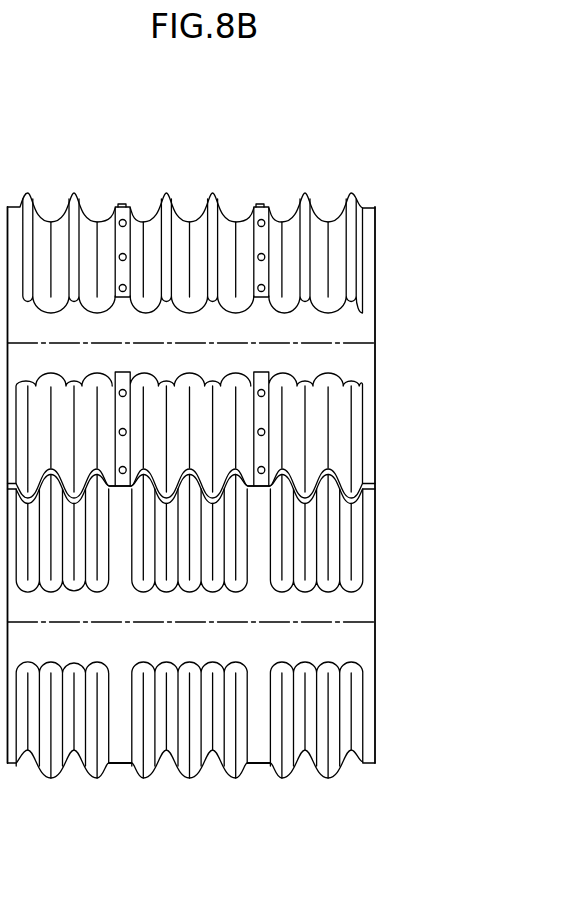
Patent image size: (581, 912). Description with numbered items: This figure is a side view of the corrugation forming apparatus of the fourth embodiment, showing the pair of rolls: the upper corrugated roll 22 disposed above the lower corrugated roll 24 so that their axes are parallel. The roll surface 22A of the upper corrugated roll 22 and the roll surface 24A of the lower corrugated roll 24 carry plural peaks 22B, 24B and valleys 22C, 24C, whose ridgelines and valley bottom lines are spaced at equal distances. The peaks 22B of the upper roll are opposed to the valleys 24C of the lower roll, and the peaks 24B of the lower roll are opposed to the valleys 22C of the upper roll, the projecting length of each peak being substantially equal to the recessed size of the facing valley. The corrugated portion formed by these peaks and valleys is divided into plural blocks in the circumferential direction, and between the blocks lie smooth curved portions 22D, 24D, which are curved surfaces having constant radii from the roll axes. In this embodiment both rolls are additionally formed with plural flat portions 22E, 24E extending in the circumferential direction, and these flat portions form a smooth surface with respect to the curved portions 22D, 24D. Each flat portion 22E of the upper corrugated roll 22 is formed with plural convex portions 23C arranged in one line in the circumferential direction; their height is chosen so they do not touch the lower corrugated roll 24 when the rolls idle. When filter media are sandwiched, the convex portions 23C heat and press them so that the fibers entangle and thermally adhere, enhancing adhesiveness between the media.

The upper corrugated roll 22 is at (236, 330).
The roll surface 22A is at (362, 318).
The peaks 22B is at (302, 412).
The valleys 22C is at (300, 463).
The curved portion 22D is at (372, 358).
The flat portion 22E is at (129, 236).
The convex portions 23C is at (116, 257).
The lower corrugated roll 24 is at (236, 651).
The roll surface 24A is at (362, 661).
The peaks 24B is at (298, 522).
The valleys 24C is at (298, 567).
The curved portion 24D is at (372, 604).
The flat portion 24E is at (119, 764).